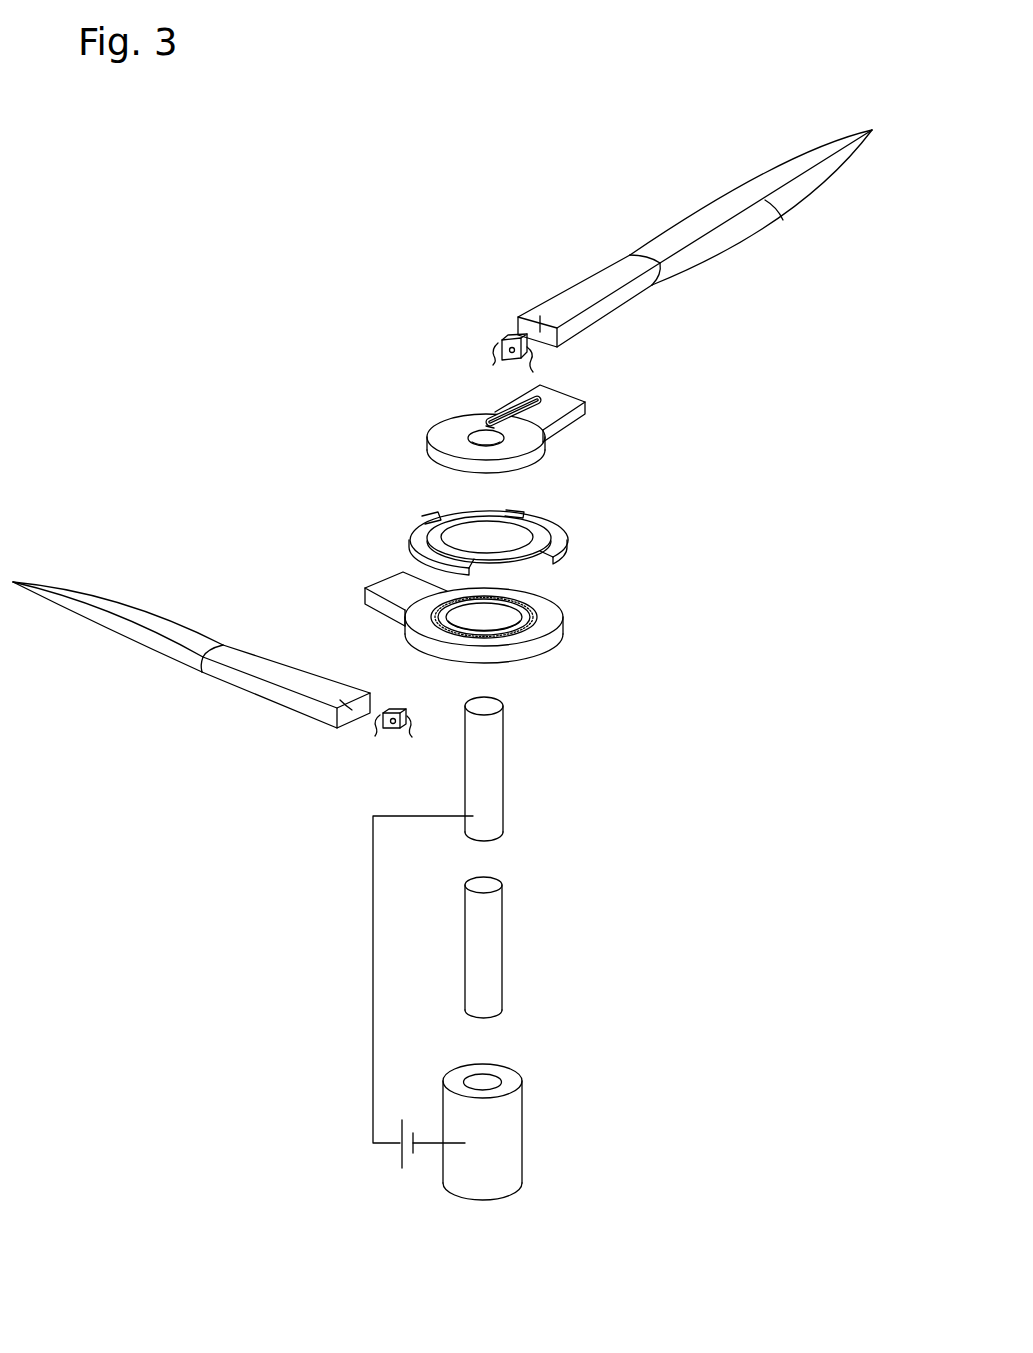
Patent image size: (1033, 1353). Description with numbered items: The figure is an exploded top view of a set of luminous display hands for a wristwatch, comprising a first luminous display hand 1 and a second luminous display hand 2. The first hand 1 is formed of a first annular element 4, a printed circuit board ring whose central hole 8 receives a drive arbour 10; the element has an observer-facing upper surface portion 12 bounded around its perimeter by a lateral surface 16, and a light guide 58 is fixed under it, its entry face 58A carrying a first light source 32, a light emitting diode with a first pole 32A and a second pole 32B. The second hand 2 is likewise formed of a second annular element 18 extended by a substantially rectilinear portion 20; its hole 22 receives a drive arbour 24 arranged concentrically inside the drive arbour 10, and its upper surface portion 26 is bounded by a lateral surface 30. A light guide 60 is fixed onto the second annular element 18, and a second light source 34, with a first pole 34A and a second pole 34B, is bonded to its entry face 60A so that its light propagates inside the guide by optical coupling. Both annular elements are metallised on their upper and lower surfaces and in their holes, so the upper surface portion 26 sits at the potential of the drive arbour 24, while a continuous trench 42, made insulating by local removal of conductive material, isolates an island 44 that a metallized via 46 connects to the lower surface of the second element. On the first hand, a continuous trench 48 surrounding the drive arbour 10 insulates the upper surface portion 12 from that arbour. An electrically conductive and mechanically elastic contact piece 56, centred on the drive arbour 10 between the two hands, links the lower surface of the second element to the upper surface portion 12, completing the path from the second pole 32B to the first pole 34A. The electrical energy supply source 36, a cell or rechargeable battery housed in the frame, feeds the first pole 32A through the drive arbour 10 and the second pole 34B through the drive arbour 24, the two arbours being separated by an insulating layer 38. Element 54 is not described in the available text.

The first luminous display hand 1 is at (205, 582).
The second luminous display hand 2 is at (772, 120).
The first annular element 4 is at (572, 617).
The hole 8 is at (498, 617).
The drive arbour 10 is at (490, 1157).
The upper surface portion 12 is at (537, 627).
The lateral surface 16 is at (510, 660).
The second annular element 18 is at (516, 482).
The portion 20 is at (708, 183).
The hole 22 is at (477, 437).
The drive arbour 24 is at (492, 795).
The upper surface portion 26 is at (448, 447).
The lateral surface 30 is at (437, 462).
The first light source 32 is at (397, 732).
The first pole 32A is at (380, 730).
The second pole 32B is at (410, 712).
The second light source 34 is at (535, 370).
The first pole 34A is at (497, 338).
The second pole 34B is at (548, 340).
The electrical energy supply source 36 is at (382, 1182).
The insulating layer 38 is at (487, 973).
The continuous trench 42 is at (528, 402).
The island 44 is at (567, 413).
The metallized through hole or via 46 is at (497, 423).
The continuous trench 48 is at (485, 614).
The tab 54 is at (440, 608).
The contact piece 56 is at (552, 541).
The light guide 58 is at (233, 675).
The entry face 58A is at (353, 712).
The light guide 60 is at (778, 222).
The entry face 60A is at (540, 316).